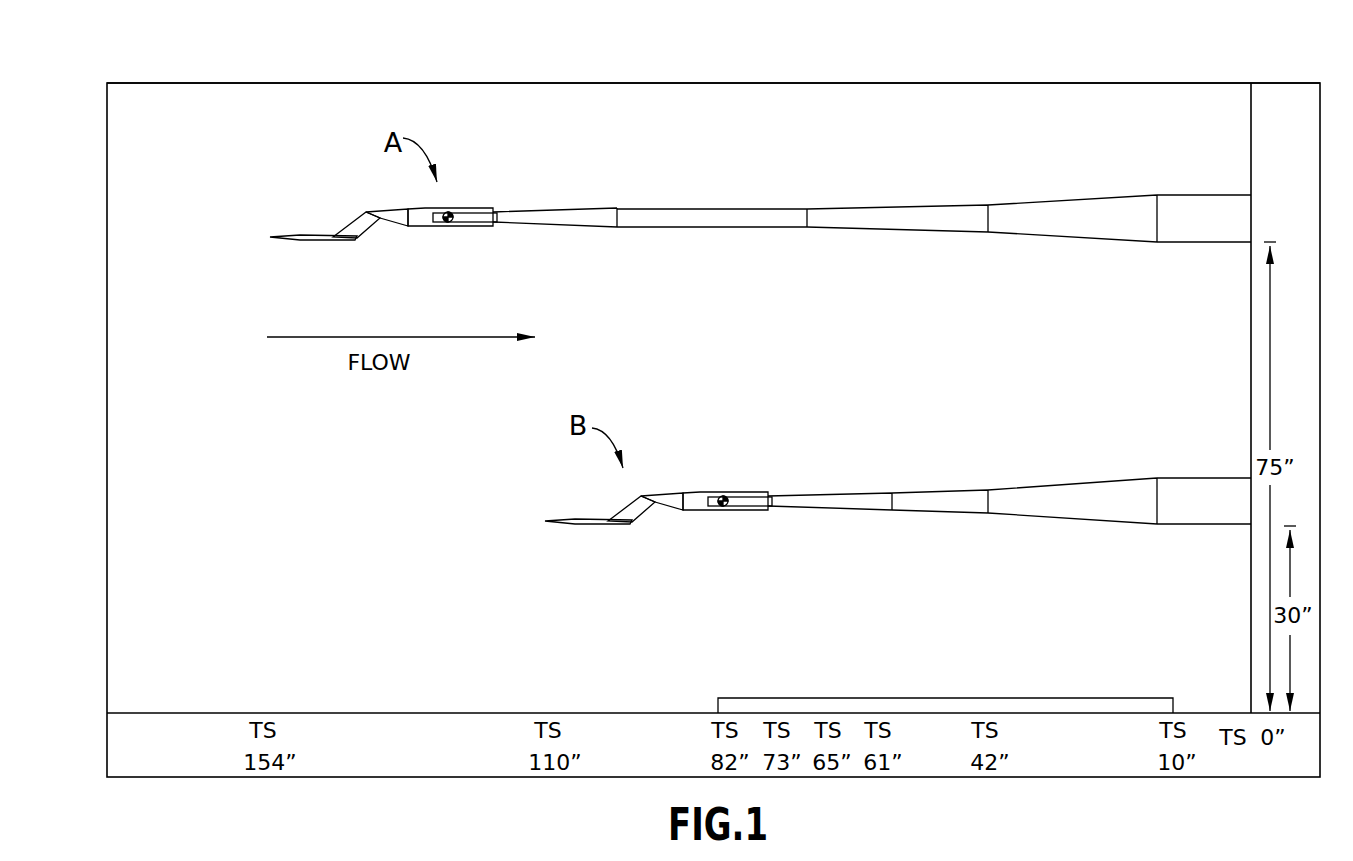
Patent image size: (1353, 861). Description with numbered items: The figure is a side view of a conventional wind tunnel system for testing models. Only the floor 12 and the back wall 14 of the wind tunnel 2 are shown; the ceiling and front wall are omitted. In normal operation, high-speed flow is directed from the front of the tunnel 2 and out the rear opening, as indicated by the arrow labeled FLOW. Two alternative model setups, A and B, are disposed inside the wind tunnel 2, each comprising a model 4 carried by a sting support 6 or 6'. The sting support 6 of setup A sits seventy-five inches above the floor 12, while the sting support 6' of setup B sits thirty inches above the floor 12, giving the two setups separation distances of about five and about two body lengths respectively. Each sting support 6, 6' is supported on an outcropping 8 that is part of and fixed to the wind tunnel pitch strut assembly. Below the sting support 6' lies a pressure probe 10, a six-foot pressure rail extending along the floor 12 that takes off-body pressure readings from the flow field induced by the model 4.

The wind tunnel 2 is at (605, 120).
The back wall 14 is at (1028, 93).
The outcropping 8 is at (1250, 128).
The floor 12 is at (390, 710).
The pressure probe 10 is at (815, 697).
The model 4 is at (303, 233).
The sting support 6 is at (792, 204).
The sting support 6' is at (929, 486).